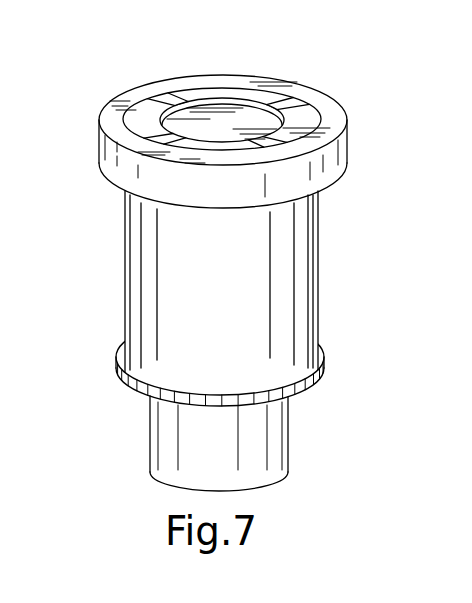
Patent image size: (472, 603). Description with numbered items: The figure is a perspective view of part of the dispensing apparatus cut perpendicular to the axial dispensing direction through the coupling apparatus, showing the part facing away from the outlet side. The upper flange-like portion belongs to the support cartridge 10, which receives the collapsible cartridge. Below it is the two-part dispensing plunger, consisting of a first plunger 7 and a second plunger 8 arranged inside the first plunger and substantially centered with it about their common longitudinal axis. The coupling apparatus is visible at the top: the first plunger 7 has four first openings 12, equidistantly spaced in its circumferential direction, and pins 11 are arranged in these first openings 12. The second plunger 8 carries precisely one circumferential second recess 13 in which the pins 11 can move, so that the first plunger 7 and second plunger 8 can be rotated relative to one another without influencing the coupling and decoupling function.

The first plunger 7 is at (319, 278).
The second plunger 8 is at (292, 440).
The support cartridge 10 is at (99, 147).
The pins 11 is at (148, 135).
The first openings 12 is at (183, 105).
The second recess 13 is at (288, 122).